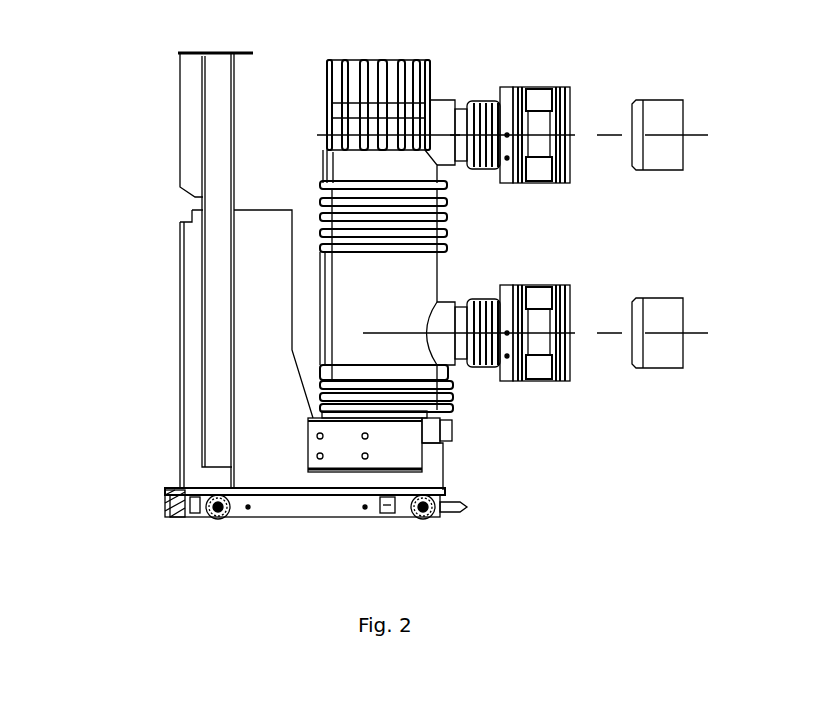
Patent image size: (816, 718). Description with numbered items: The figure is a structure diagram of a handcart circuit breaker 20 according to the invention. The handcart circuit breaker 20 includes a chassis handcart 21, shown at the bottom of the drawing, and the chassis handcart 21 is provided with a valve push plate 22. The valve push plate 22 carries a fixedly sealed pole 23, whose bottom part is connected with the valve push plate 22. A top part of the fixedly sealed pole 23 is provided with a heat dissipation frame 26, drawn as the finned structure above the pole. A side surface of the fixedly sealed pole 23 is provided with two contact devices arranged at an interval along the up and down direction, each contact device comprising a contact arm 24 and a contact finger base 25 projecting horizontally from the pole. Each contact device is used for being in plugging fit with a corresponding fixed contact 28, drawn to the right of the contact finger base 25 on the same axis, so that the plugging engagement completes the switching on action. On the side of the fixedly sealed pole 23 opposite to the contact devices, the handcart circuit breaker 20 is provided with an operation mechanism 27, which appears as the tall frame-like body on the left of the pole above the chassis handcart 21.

The handcart circuit breaker 20 is at (157, 293).
The chassis handcart 21 is at (238, 505).
The valve push plate 22 is at (388, 443).
The fixedly sealed pole 23 is at (428, 280).
The contact arm 24 is at (483, 98).
The contact finger base 25 is at (555, 90).
The heat dissipation frame 26 is at (368, 100).
The operation mechanism 27 is at (250, 230).
The fixed contact 28 is at (660, 100).